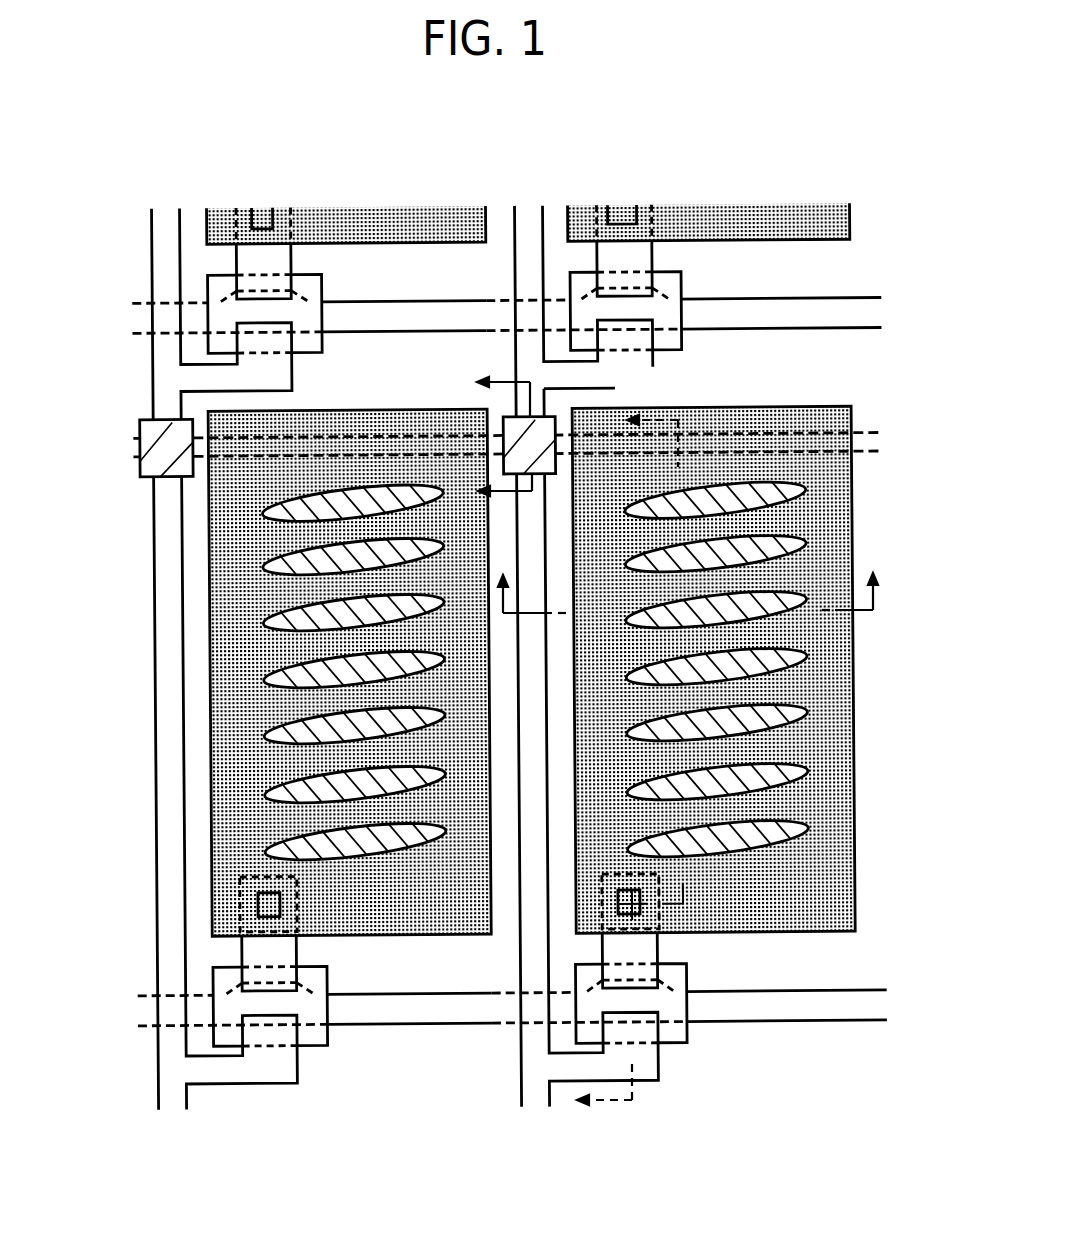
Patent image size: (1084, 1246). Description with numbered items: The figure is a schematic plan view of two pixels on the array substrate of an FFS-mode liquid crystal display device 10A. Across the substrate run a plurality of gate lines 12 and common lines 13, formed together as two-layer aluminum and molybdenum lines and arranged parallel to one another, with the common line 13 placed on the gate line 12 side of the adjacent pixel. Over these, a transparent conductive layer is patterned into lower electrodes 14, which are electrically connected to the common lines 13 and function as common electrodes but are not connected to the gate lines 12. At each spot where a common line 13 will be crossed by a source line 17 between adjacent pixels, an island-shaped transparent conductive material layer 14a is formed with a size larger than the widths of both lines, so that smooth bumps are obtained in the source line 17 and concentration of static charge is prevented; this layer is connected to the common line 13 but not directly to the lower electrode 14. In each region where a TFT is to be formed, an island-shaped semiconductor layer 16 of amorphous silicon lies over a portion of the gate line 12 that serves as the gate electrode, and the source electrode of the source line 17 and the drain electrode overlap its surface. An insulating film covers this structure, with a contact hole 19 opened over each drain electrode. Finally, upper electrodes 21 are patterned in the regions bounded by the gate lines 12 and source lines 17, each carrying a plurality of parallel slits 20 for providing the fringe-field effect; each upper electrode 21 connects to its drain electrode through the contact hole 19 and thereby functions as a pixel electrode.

The FFS-mode liquid crystal display device 10A is at (418, 122).
The gate line 12 is at (845, 308).
The common line 13 is at (866, 441).
The lower electrode 14 is at (263, 620).
The transparent conductive material layer 14a is at (140, 422).
The semiconductor layer 16 is at (220, 980).
The source line 17 is at (530, 248).
The contact hole 19 is at (258, 905).
The slit 20 is at (272, 664).
The upper electrode 21 is at (230, 533).
The thin film transistor TFT is at (334, 1067).